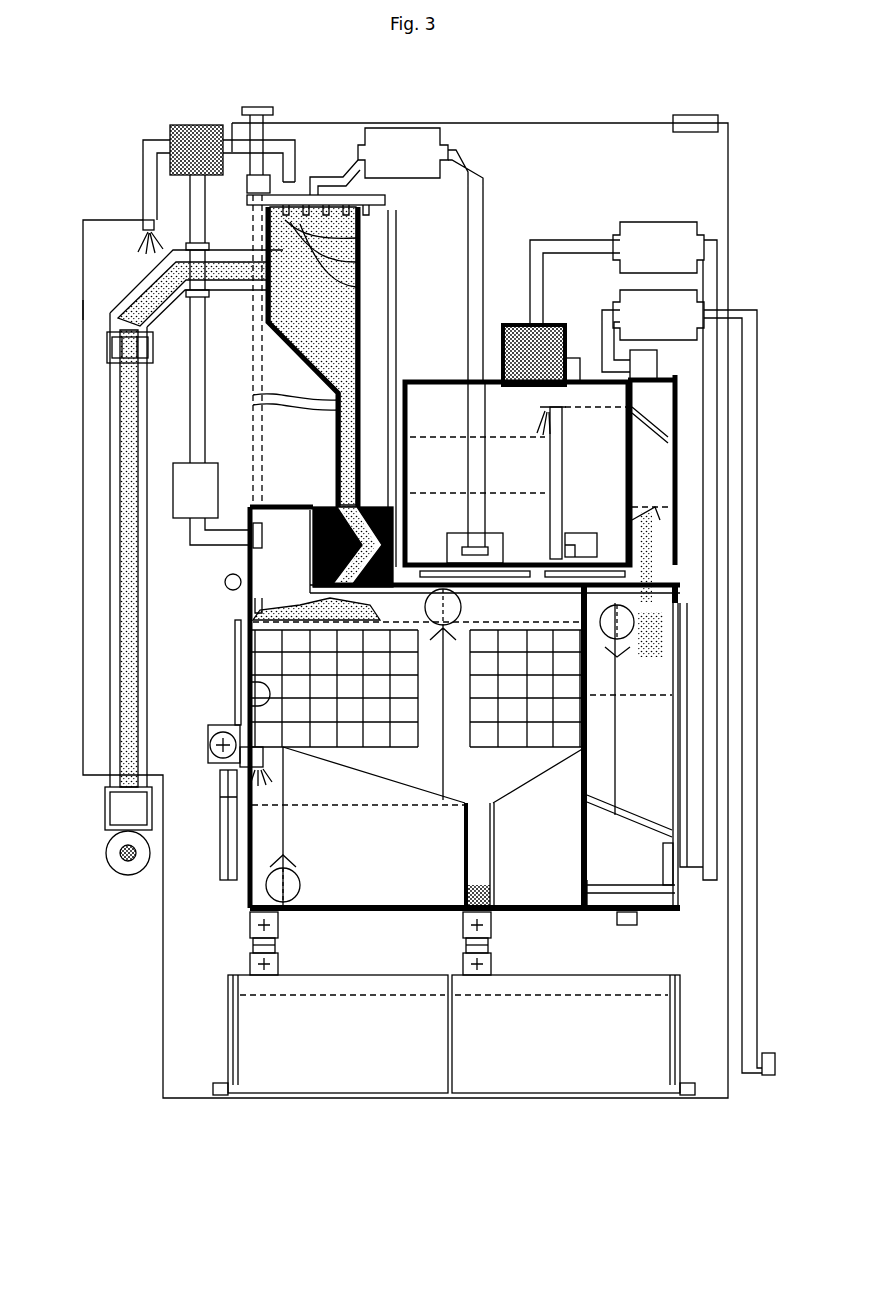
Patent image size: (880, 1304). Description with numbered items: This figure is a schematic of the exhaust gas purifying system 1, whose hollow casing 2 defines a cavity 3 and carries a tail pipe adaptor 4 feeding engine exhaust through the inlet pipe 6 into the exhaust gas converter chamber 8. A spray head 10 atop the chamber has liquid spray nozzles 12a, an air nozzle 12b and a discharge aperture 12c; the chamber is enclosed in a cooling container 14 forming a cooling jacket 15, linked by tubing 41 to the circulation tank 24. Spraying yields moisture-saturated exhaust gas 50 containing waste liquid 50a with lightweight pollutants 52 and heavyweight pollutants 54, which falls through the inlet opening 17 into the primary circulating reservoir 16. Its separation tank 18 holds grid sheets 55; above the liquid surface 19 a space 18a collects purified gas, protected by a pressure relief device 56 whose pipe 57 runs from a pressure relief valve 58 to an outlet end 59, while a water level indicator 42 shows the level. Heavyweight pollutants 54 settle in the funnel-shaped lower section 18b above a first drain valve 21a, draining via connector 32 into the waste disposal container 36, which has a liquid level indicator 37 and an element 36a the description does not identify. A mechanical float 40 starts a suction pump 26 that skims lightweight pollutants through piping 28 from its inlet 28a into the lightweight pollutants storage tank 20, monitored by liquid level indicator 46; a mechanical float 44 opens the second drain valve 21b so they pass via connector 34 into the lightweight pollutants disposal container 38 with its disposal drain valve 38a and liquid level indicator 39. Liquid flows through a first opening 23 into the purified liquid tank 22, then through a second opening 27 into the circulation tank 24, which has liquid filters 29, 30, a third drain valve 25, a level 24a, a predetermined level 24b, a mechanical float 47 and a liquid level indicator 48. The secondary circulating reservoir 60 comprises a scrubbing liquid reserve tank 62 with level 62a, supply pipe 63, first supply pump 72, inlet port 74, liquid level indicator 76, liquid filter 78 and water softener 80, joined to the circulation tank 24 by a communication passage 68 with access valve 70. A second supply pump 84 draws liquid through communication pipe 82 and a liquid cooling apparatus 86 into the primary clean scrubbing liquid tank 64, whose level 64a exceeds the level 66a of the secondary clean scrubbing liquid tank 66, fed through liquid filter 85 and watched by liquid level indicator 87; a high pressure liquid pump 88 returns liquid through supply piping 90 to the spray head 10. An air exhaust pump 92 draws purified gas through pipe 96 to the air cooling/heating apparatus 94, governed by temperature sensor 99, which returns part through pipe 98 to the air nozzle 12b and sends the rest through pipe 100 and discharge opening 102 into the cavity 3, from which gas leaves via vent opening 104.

The exhaust gas purifying system 1 is at (572, 98).
The hollow casing 2 is at (83, 272).
The cavity 3 is at (83, 302).
The tail pipe adaptor 4 is at (106, 853).
The inlet pipe 6 is at (110, 703).
The exhaust gas converter chamber 8 is at (300, 367).
The spray head 10 is at (390, 202).
The liquid spray nozzles 12a is at (356, 286).
The air nozzle 12b is at (356, 261).
The discharge aperture 12c is at (356, 236).
The cooling container 14 is at (240, 337).
The cooling jacket 15 is at (253, 392).
The primary circulating reservoir 16 is at (245, 607).
The inlet opening 17 is at (358, 558).
The separation tank 18 is at (417, 746).
The space 18a is at (275, 563).
The funnel-shaped lower section 18b is at (466, 865).
The surface 19 is at (530, 620).
The lightweight pollutants storage tank 20 is at (358, 827).
The first drain valve 21a is at (462, 930).
The second drain valve 21b is at (248, 930).
The purified liquid tank 22 is at (544, 807).
The first opening 23 is at (495, 852).
The circulation tank 24 is at (646, 745).
The level 24a is at (665, 627).
The predetermined level 24b is at (648, 697).
The third drain valve 25 is at (627, 925).
The suction pump 26 is at (208, 744).
The second opening 27 is at (582, 893).
The piping 28 is at (258, 703).
The inlet 28a is at (270, 612).
The liquid filter 29 is at (624, 884).
The liquid filter 30 is at (650, 825).
The connector 32 is at (491, 945).
The connector 34 is at (278, 945).
The waste disposal container 36 is at (595, 1090).
The foot 36a is at (696, 1088).
The liquid level indicator 37 is at (680, 1030).
The lightweight pollutants disposal container 38 is at (327, 1090).
The disposal drain valve 38a is at (212, 1088).
The liquid level indicator 39 is at (228, 1018).
The mechanical float 40 is at (462, 608).
The tubing 41 is at (385, 595).
The water level indicator 42 is at (235, 668).
The mechanical float 44 is at (300, 886).
The liquid level indicator 46 is at (220, 849).
The mechanical float 47 is at (604, 638).
The liquid level indicator 48 is at (690, 746).
The moisture-saturated exhaust gas 50 is at (345, 488).
The waste liquid 50a is at (435, 660).
The lightweight pollutants 52 is at (330, 615).
The heavyweight pollutants 54 is at (466, 895).
The thin metal or plastic sheets 55 is at (393, 728).
The pressure relief device 56 is at (263, 425).
The pipe 57 is at (264, 455).
The pressure relief valve 58 is at (268, 522).
The outlet end 59 is at (257, 106).
The secondary circulating reservoir 60 is at (448, 380).
The scrubbing liquid reserve tank 62 is at (652, 470).
The level 62a is at (652, 506).
The built-in supply pipe 63 is at (757, 826).
The primary clean scrubbing liquid tank 64 is at (596, 473).
The liquid level 64a is at (597, 408).
The secondary clean scrubbing liquid tank 66 is at (477, 472).
The liquid level 66a is at (445, 437).
The communication passage 68 is at (660, 548).
The access valve 70 is at (650, 528).
The first supply pump 72 is at (622, 305).
The inlet port 74 is at (675, 378).
The liquid level indicator 76 is at (690, 480).
The liquid filter 78 is at (675, 413).
The water softener 80 is at (650, 510).
The communication pipe 82 is at (720, 785).
The second supply pump 84 is at (622, 232).
The liquid filter 85 is at (580, 533).
The liquid cooling apparatus 86 is at (552, 322).
The liquid level indicator 87 is at (396, 400).
The third, high pressure liquid pump 88 is at (405, 128).
The supply piping 90 is at (337, 158).
The air exhaust pump 92 is at (176, 463).
The air cooling/heating apparatus 94 is at (180, 124).
The pipe 96 is at (190, 392).
The pipe 98 is at (297, 150).
The temperature sensor 99 is at (225, 580).
The pipe 100 is at (143, 188).
The discharge opening 102 is at (140, 238).
The vent opening 104 is at (696, 114).